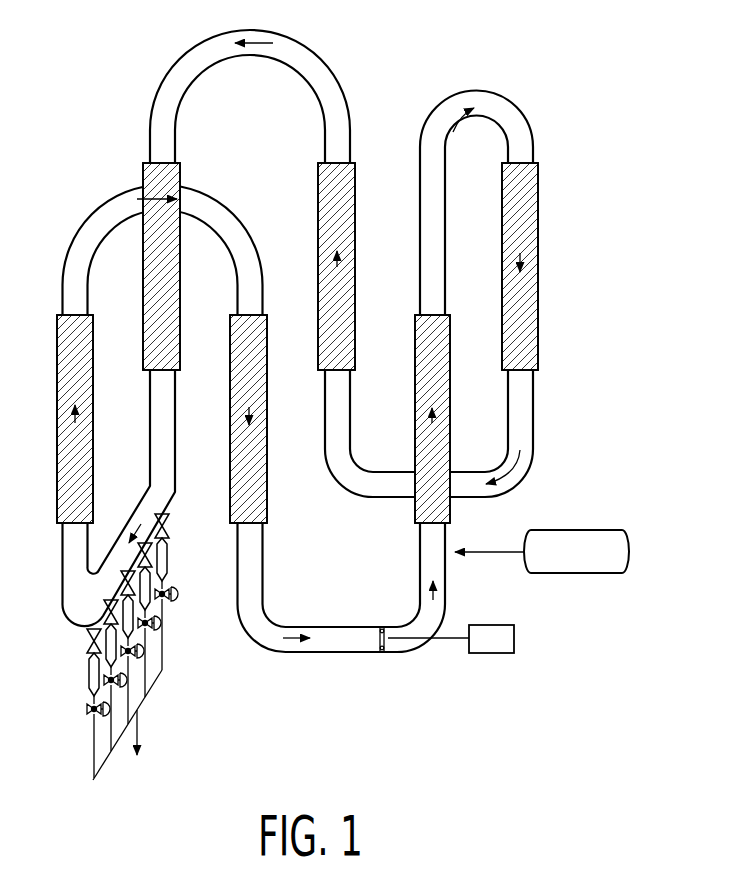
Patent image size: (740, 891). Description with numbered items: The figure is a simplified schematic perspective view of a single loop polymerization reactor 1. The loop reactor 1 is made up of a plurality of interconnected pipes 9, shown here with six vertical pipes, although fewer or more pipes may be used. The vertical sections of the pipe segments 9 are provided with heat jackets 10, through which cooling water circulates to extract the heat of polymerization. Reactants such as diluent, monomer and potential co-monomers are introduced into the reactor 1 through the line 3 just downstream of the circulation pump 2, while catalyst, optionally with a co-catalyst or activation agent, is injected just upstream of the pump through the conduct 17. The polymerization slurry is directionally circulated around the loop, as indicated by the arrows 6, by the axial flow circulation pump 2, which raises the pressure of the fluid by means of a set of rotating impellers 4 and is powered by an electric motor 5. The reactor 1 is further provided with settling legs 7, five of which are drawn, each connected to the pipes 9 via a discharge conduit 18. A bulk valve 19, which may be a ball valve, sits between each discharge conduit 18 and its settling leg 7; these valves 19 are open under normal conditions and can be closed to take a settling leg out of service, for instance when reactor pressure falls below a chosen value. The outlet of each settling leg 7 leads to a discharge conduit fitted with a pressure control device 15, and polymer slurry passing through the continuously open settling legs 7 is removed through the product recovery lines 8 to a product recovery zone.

The loop reactor 1 is at (344, 331).
The circulation pump 2 is at (407, 643).
The line 3 is at (493, 558).
The rotating impellers 4 is at (377, 654).
The electric motor 5 is at (515, 637).
The arrows 6 is at (457, 117).
The settling legs 7 is at (87, 668).
The product recovery lines 8 is at (137, 751).
The interconnected pipes 9 is at (535, 413).
The heat jackets 10 is at (542, 290).
The pressure control device 15 is at (178, 597).
The conduct 17 is at (340, 618).
The discharge conduit 18 is at (166, 516).
The bulk valve 19 is at (168, 538).